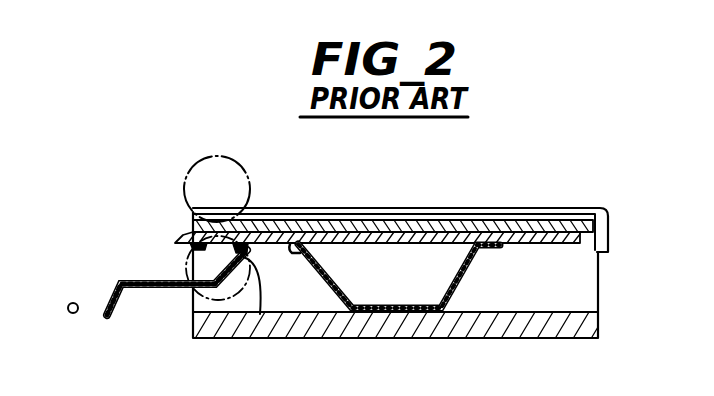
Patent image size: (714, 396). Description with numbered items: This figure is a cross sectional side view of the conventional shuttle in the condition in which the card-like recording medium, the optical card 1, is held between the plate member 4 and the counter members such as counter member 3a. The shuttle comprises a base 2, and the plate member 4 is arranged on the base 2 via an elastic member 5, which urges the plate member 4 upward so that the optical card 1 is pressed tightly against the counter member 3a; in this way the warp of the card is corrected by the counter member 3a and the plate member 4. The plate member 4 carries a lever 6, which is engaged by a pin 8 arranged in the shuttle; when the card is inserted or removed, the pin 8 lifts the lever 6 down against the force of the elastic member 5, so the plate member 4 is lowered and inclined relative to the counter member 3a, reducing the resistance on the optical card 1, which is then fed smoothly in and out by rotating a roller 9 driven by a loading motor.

The optical card 1 is at (545, 208).
The base 2 is at (570, 320).
The counter member 3a is at (483, 208).
The plate member 4 is at (393, 217).
The elastic member 5 is at (463, 277).
The lever 6 is at (133, 280).
The pin 8 is at (73, 302).
The roller 9 is at (247, 178).